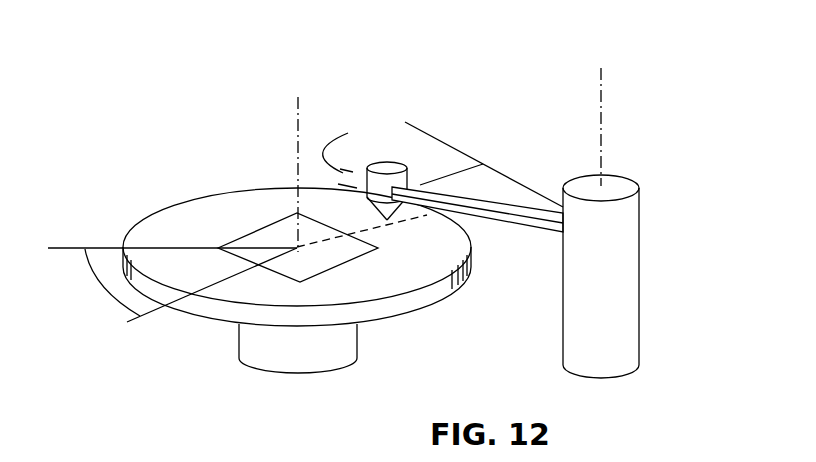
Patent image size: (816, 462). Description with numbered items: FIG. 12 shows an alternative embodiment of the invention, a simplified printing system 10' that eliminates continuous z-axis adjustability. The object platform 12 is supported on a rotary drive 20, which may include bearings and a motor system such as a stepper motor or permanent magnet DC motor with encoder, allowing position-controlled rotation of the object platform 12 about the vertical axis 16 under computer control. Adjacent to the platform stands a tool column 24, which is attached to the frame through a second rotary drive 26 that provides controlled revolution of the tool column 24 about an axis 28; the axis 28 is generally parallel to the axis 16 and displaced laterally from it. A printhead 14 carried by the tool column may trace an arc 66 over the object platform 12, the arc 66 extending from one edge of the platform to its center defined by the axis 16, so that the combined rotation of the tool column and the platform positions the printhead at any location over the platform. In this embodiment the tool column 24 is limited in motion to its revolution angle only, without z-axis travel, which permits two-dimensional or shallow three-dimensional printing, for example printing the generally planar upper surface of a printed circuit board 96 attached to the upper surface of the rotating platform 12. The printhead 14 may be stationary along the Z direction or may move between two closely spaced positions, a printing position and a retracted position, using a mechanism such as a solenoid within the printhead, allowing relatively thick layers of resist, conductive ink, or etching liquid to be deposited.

The printing system 10' is at (106, 83).
The object platform 12 is at (371, 293).
The printhead 14 is at (389, 170).
The axis 16 is at (298, 142).
The rotary drive 20 is at (300, 357).
The tool column 24 is at (558, 223).
The rotary drive 26 is at (610, 308).
The axis 28 is at (602, 98).
The arc 66 is at (377, 223).
The printed circuit board 96 is at (302, 255).
The z-axis Z is at (345, 154).